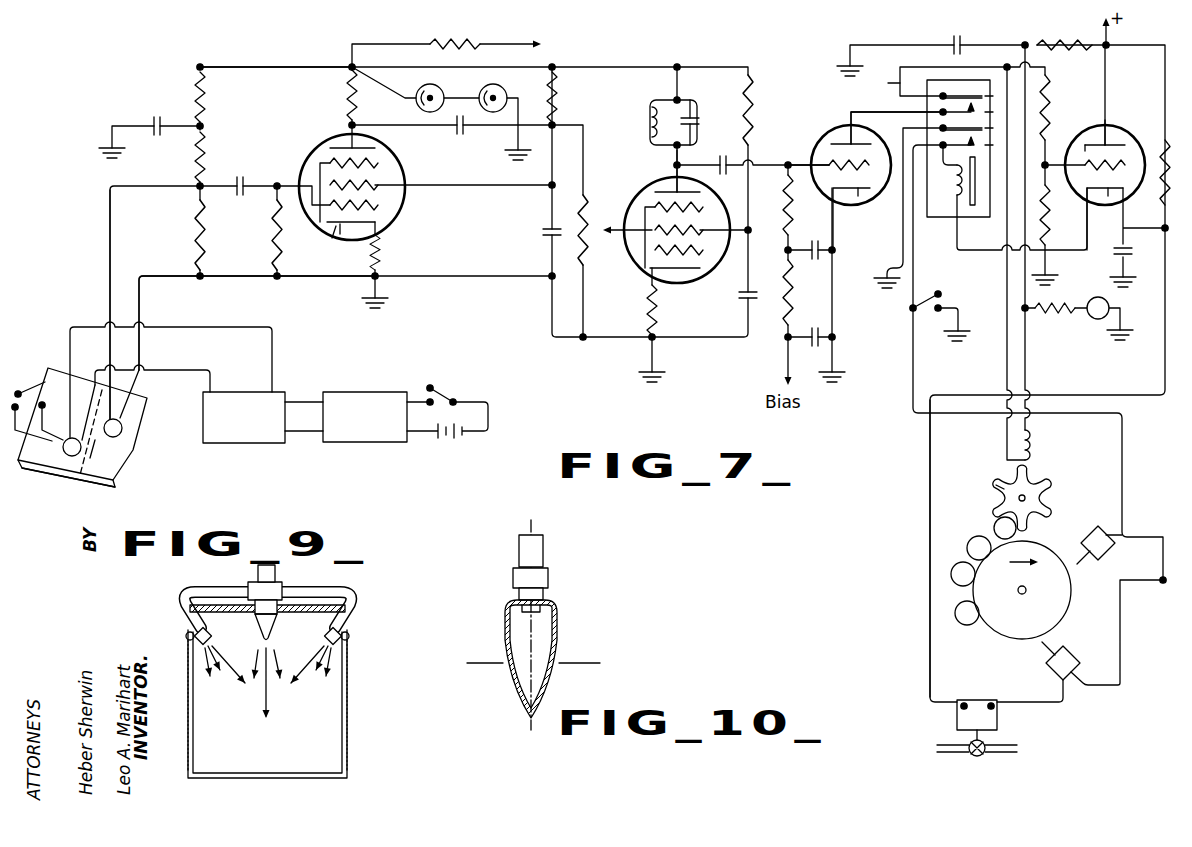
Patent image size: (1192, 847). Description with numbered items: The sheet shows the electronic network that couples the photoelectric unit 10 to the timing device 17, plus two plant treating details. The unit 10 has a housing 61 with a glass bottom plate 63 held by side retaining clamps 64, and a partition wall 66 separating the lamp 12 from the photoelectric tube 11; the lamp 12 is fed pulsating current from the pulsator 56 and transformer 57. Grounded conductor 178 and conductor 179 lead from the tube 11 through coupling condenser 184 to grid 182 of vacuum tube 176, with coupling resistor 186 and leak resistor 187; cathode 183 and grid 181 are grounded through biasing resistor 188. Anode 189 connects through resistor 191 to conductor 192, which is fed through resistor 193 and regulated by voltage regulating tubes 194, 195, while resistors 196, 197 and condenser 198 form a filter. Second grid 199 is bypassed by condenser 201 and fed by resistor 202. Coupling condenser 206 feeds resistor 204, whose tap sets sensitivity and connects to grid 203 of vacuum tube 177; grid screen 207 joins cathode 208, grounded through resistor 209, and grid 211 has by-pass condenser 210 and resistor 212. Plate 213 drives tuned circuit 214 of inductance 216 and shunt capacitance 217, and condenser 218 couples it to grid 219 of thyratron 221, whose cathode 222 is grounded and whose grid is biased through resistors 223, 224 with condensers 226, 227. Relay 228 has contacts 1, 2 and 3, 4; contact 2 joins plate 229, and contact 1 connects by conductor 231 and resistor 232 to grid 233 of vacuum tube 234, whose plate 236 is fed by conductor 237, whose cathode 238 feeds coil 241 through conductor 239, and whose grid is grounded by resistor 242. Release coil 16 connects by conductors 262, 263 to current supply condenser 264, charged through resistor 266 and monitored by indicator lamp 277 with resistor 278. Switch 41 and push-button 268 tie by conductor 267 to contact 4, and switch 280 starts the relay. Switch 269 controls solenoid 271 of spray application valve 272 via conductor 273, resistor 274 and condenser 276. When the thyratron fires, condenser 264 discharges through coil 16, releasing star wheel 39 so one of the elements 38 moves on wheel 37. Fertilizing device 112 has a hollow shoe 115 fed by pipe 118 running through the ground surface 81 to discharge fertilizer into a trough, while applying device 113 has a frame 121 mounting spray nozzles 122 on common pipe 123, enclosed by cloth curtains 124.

In FIG. 7, the photoelectric unit 10 is at (54, 364).
In FIG. 7, the photoelectric tube 11 is at (122, 428).
In FIG. 7, the lamp 12 is at (70, 458).
In FIG. 7, the release coil 16 is at (1035, 443).
In FIG. 7, the timing device 17 is at (996, 474).
In FIG. 7, the wheel 37 is at (1005, 624).
In FIG. 7, the elements 38 is at (980, 534).
In FIG. 7, the star wheel 39 is at (1037, 474).
In FIG. 7, the switch 41 is at (1087, 532).
In FIG. 7, the pulsator 56 is at (378, 378).
In FIG. 7, the transformer 57 is at (258, 378).
In FIG. 7, the housing 61 is at (133, 408).
In FIG. 7, the transparent bottom plate 63 is at (35, 480).
In FIG. 7, the side retaining clamps 64 is at (92, 480).
In FIG. 7, the partition wall 66 is at (92, 448).
In FIG. 10, the ground surface 81 is at (578, 663).
In FIG. 10, the fertilizing device 112 is at (560, 600).
In FIG. 9, the applying device 113 is at (348, 695).
In FIG. 10, the hollow runner or shoe 115 is at (558, 630).
In FIG. 10, the pipe or hose 118 is at (543, 550).
In FIG. 9, the frame 121 is at (306, 606).
In FIG. 9, the liquid spray nozzles 122 is at (259, 636).
In FIG. 9, the common pipe 123 is at (249, 598).
In FIG. 9, the flexible cloth curtains 124 is at (188, 690).
In FIG. 7, the vacuum tube 176 is at (340, 138).
In FIG. 7, the vacuum tube 177 is at (655, 182).
In FIG. 7, the conductor 178 is at (447, 282).
In FIG. 7, the conductor 179 is at (110, 218).
In FIG. 7, the grid 181 is at (378, 163).
In FIG. 7, the grid 182 is at (378, 205).
In FIG. 7, the cathode 183 is at (338, 240).
In FIG. 7, the coupling condenser 184 is at (234, 176).
In FIG. 7, the coupling resistor 186 is at (194, 230).
In FIG. 7, the leak resistor 187 is at (271, 246).
In FIG. 7, the biasing resistor 188 is at (382, 255).
In FIG. 7, the anode 189 is at (350, 118).
In FIG. 7, the resistor 191 is at (346, 86).
In FIG. 7, the conductor 192 is at (256, 64).
In FIG. 7, the resistor 193 is at (434, 43).
In FIG. 7, the voltage regulating tube 194 is at (438, 86).
In FIG. 7, the voltage regulating tube 195 is at (499, 86).
In FIG. 7, the resistor 196 is at (195, 88).
In FIG. 7, the resistor 197 is at (195, 166).
In FIG. 7, the condenser 198 is at (152, 118).
In FIG. 7, the second grid 199 is at (378, 185).
In FIG. 7, the by-pass condenser 201 is at (548, 228).
In FIG. 7, the resistor 202 is at (556, 98).
In FIG. 7, the grid 203 is at (704, 262).
In FIG. 7, the resistor 204 is at (605, 238).
In FIG. 7, the coupling condenser 206 is at (453, 130).
In FIG. 7, the grid screen 207 is at (702, 190).
In FIG. 7, the cathode 208 is at (672, 282).
In FIG. 7, the resistor 209 is at (660, 316).
In FIG. 7, the by-pass condenser 210 is at (743, 306).
In FIG. 7, the grid 211 is at (644, 202).
In FIG. 7, the resistor 212 is at (758, 98).
In FIG. 7, the plate 213 is at (675, 176).
In FIG. 7, the tuned circuit 214 is at (660, 88).
In FIG. 7, the inductance 216 is at (656, 108).
In FIG. 7, the shunt capacitance 217 is at (698, 112).
In FIG. 7, the condenser 218 is at (734, 156).
In FIG. 7, the grid 219 is at (822, 164).
In FIG. 7, the vacuum tube 221 is at (834, 130).
In FIG. 7, the cathode 222 is at (858, 196).
In FIG. 7, the resistor 223 is at (786, 212).
In FIG. 7, the resistor 224 is at (784, 266).
In FIG. 7, the condenser 226 is at (818, 332).
In FIG. 7, the condenser 227 is at (833, 244).
In FIG. 7, the relay 228 is at (932, 66).
In FIG. 7, the plate 229 is at (840, 124).
In FIG. 7, the conductor 231 is at (880, 80).
In FIG. 7, the resistor 232 is at (1052, 88).
In FIG. 7, the grid 233 is at (1126, 152).
In FIG. 7, the vacuum tube 234 is at (1108, 132).
In FIG. 7, the plate 236 is at (1088, 122).
In FIG. 7, the conductor 237 is at (1108, 78).
In FIG. 7, the cathode 238 is at (1108, 196).
In FIG. 7, the conductor 239 is at (944, 288).
In FIG. 7, the coil 241 is at (954, 214).
In FIG. 7, the resistor 242 is at (1047, 230).
In FIG. 7, the conductor 262 is at (1007, 380).
In FIG. 7, the conductor 263 is at (1025, 380).
In FIG. 7, the current supply condenser 264 is at (952, 42).
In FIG. 7, the resistor 266 is at (1035, 40).
In FIG. 7, the conductor 267 is at (913, 380).
In FIG. 7, the push-button or switch 268 is at (940, 302).
In FIG. 7, the switch 269 is at (1078, 642).
In FIG. 7, the solenoid 271 is at (990, 722).
In FIG. 7, the spray application valve 272 is at (984, 758).
In FIG. 7, the conductor 273 is at (930, 545).
In FIG. 7, the resistor 274 is at (1158, 198).
In FIG. 7, the current supply condenser 276 is at (1116, 256).
In FIG. 7, the indicator lamp 277 is at (1114, 304).
In FIG. 7, the resistor 278 is at (1047, 312).
In FIG. 7, the switch 280 is at (28, 388).
In FIG. 7, the movable contact 1 is at (996, 95).
In FIG. 7, the stationary contact 2 is at (996, 111).
In FIG. 7, the contact 3 is at (996, 127).
In FIG. 7, the stationary contact 4 is at (996, 144).